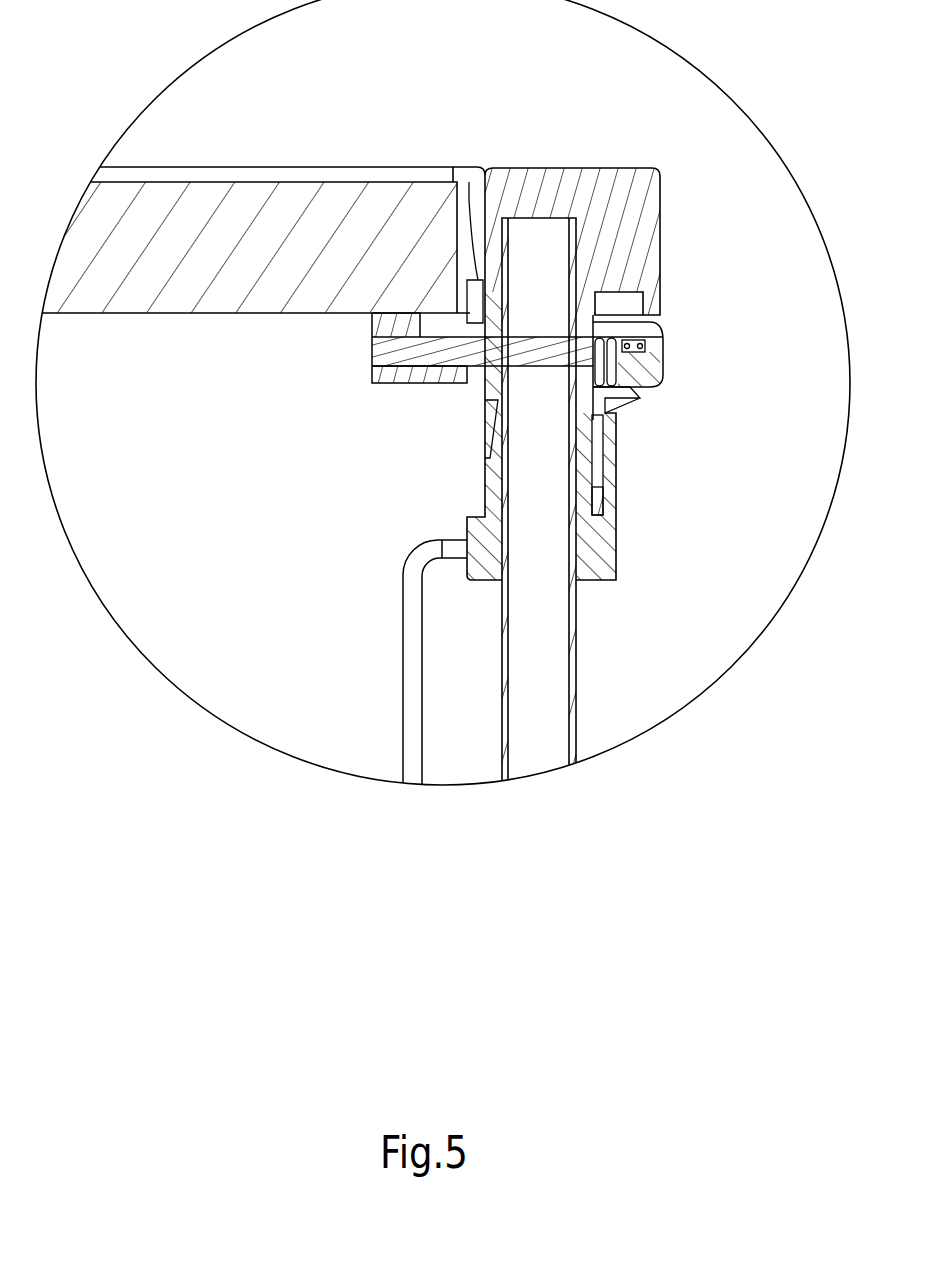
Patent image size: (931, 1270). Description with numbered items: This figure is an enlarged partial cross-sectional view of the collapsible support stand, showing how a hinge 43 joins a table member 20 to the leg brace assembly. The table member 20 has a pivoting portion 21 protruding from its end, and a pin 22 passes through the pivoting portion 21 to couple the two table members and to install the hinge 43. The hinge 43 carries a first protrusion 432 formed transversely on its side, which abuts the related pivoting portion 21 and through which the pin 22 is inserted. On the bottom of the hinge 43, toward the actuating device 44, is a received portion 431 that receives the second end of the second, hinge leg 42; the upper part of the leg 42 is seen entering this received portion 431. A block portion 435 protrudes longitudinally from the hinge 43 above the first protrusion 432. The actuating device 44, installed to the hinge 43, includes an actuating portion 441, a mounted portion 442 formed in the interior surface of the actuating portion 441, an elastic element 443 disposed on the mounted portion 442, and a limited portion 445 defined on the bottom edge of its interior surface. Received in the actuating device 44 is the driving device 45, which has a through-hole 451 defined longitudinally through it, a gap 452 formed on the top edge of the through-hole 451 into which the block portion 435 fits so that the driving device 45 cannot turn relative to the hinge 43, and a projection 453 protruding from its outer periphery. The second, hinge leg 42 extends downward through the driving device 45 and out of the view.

The table member 20 is at (338, 200).
The pivoting portion 21 is at (382, 380).
The pin 22 is at (385, 352).
The second, hinge leg 42 is at (545, 692).
The hinge 43 is at (708, 289).
The received portion 431 is at (580, 268).
The first protrusion 432 is at (475, 168).
The block portion 435 is at (495, 447).
The actuating device 44 is at (706, 367).
The actuating portion 441 is at (632, 403).
The mounted portion 442 is at (618, 358).
The elastic element 443 is at (640, 346).
The driving device 45 is at (696, 496).
The limited portion 445 is at (600, 487).
The through-hole 451 is at (573, 548).
The gap 452 is at (485, 463).
The projection 453 is at (592, 473).